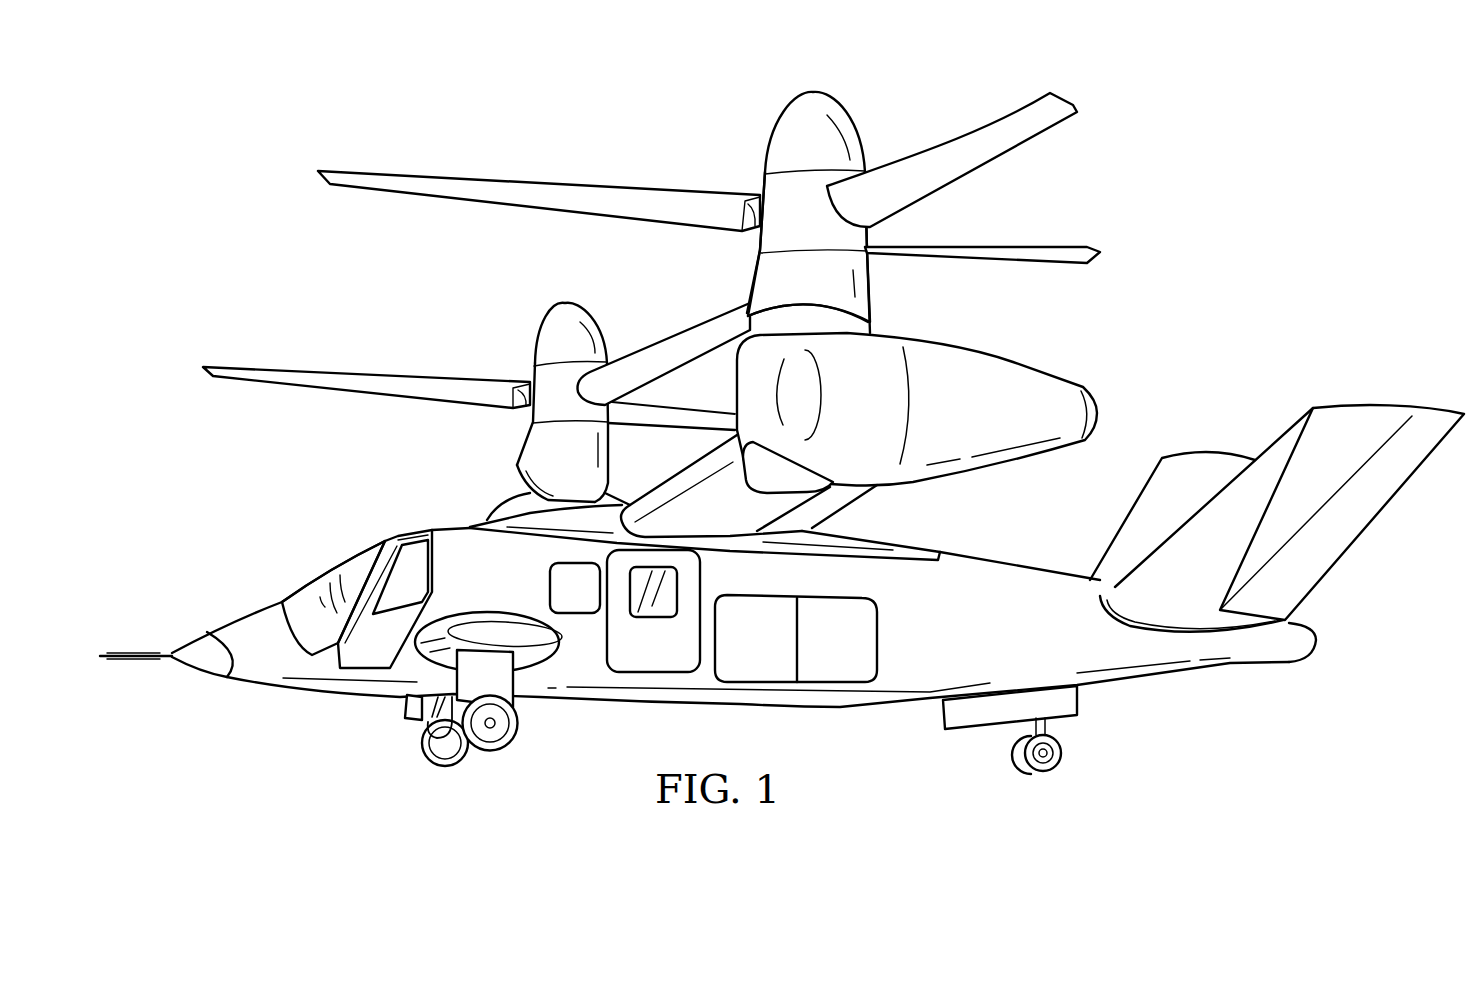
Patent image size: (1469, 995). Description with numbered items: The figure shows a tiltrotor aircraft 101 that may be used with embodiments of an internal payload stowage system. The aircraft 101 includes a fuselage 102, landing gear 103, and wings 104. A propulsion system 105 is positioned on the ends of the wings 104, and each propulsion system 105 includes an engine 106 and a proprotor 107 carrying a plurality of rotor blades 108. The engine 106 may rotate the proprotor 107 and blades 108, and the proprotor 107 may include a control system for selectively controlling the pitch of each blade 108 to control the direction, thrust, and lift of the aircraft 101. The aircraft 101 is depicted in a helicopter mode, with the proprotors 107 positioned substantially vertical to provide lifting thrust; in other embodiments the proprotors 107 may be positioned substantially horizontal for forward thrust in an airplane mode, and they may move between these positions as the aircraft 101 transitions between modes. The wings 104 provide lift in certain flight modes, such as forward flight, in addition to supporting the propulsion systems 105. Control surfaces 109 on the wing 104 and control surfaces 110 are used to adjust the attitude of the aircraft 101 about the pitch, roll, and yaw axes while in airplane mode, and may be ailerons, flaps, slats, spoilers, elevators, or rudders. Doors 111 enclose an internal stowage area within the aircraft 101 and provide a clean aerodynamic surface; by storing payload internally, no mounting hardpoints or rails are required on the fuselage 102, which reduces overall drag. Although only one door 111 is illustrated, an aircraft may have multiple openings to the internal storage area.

The aircraft 101 is at (782, 452).
The fuselage 102 is at (708, 635).
The landing gear 103 is at (495, 751).
The wings 104 is at (707, 497).
The propulsion system 105 is at (651, 298).
The engine 106 is at (1023, 360).
The proprotor 107 is at (770, 133).
The rotor blades 108 is at (651, 242).
The control surfaces 109 is at (826, 507).
The control surfaces 110 is at (1202, 455).
The doors 111 is at (867, 640).